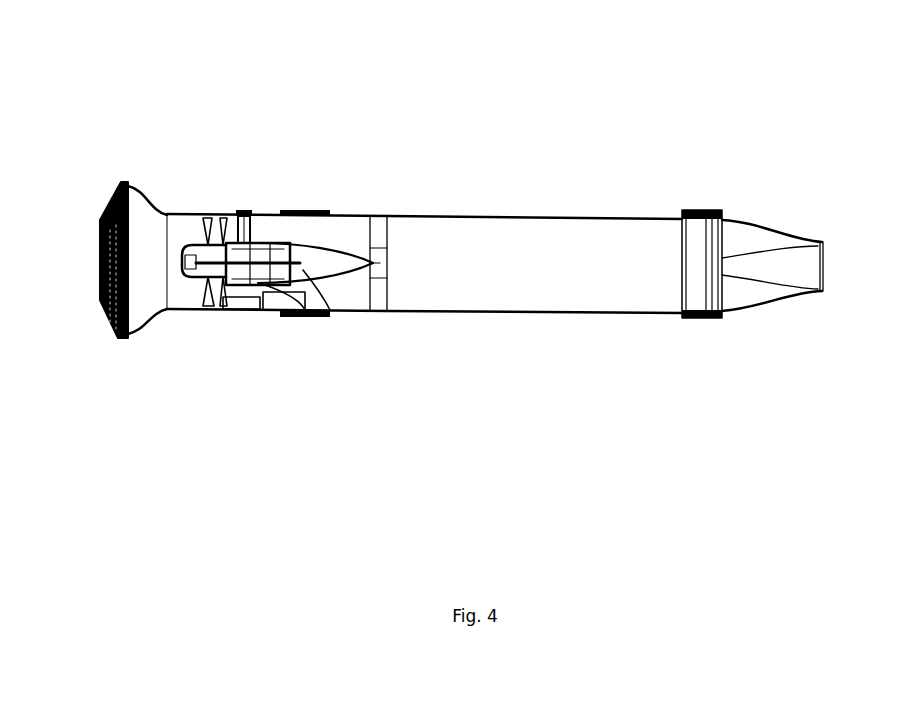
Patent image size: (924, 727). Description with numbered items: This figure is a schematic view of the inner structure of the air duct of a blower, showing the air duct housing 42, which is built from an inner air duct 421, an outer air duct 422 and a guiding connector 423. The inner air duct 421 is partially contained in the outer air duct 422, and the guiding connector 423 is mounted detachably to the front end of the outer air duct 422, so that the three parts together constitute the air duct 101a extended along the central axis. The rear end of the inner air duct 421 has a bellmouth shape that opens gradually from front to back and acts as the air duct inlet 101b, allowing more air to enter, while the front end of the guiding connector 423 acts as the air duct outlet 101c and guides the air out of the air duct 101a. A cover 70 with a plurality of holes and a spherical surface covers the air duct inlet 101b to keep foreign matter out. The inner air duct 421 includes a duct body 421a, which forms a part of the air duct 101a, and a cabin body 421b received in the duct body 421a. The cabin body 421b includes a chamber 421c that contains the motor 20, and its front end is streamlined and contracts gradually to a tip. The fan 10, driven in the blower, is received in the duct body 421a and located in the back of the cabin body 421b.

The cover 70 is at (110, 193).
The air duct inlet 101b is at (133, 293).
The air duct 101a is at (428, 243).
The air duct outlet 101c is at (805, 262).
The fan 10 is at (222, 310).
The motor 20 is at (300, 287).
The air duct housing 42 is at (495, 201).
The inner air duct 421 is at (288, 224).
The duct body 421a is at (243, 212).
The cabin body 421b is at (300, 236).
The chamber 421c is at (363, 315).
The outer air duct 422 is at (550, 215).
The guiding connector 423 is at (753, 223).